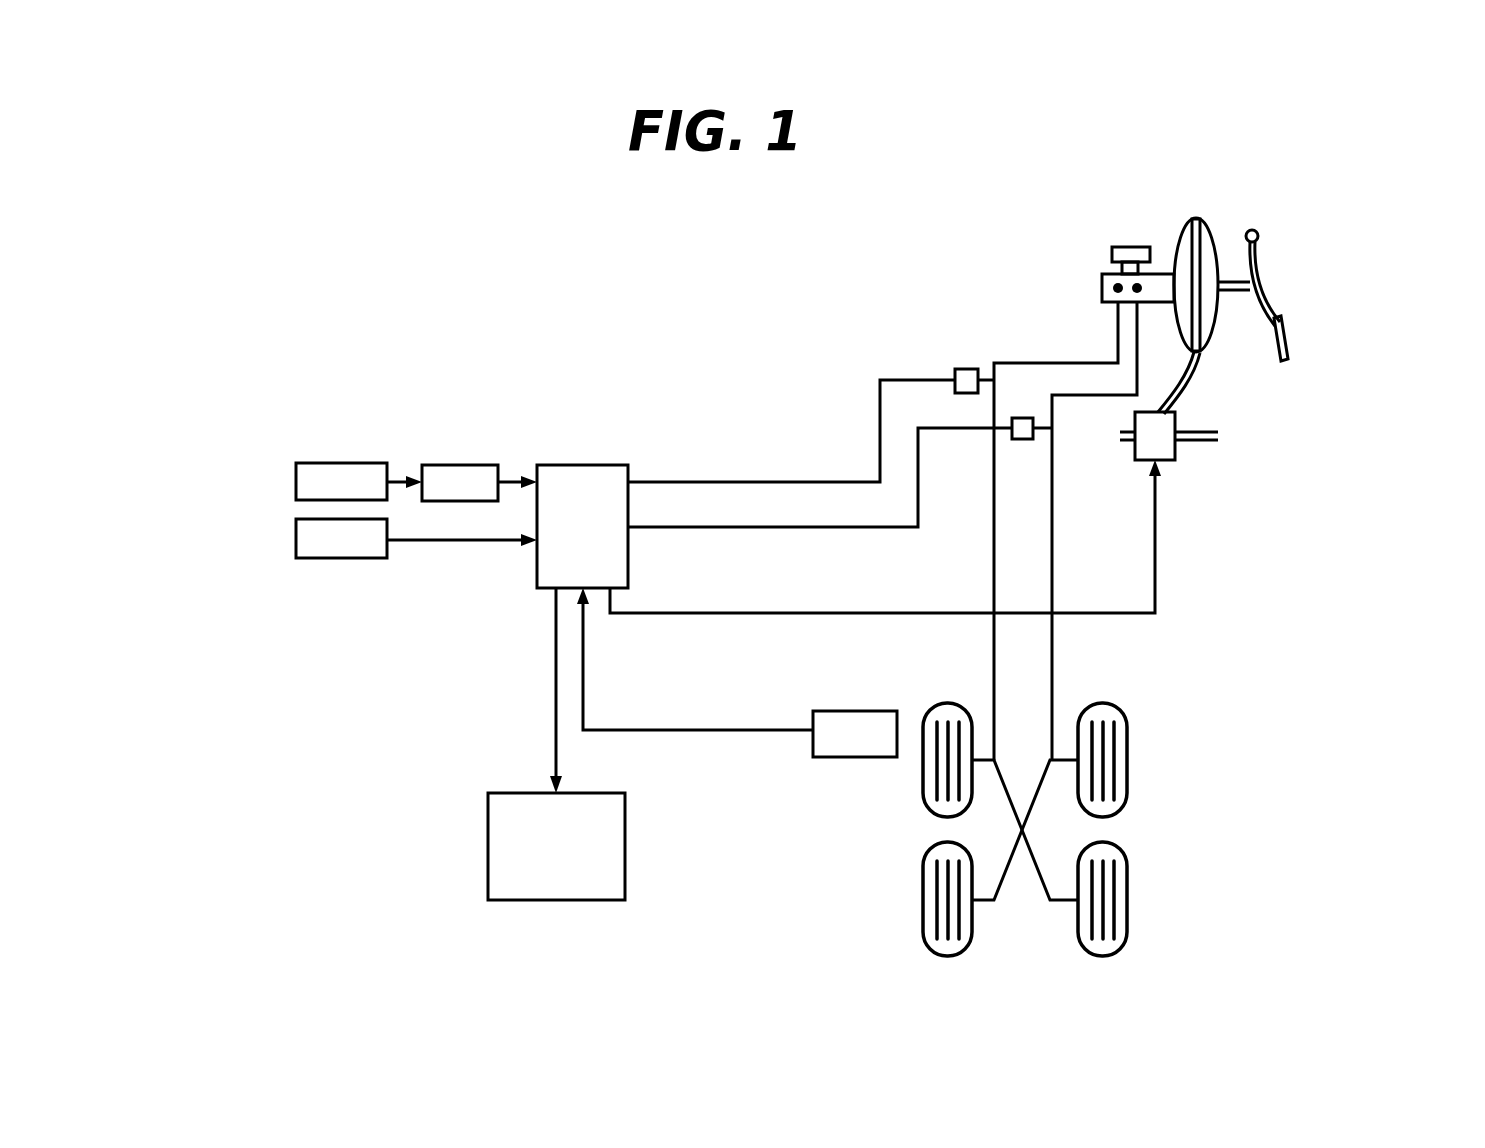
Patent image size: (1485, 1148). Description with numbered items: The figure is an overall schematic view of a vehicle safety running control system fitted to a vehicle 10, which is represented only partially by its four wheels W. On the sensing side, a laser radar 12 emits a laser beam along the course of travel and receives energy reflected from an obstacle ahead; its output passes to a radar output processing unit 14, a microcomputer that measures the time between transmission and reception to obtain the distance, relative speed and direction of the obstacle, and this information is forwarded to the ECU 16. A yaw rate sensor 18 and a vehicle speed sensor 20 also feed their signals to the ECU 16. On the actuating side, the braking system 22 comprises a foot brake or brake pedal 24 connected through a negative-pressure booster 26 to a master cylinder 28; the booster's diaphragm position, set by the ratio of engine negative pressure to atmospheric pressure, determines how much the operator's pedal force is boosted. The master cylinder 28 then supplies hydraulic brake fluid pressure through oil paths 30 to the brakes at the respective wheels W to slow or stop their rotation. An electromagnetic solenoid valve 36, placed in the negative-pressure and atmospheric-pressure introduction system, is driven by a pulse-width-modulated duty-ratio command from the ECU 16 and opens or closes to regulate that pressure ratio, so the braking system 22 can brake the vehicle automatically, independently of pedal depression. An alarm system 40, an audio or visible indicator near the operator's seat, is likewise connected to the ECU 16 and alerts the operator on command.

The vehicle 10 is at (756, 436).
The laser radar 12 is at (296, 487).
The radar output processing unit 14 is at (458, 465).
The ECU 16 is at (578, 470).
The yaw rate sensor 18 is at (296, 546).
The vehicle speed sensor 20 is at (828, 757).
The braking system 22 is at (1262, 396).
The foot brake (brake pedal) 24 is at (1257, 260).
The negative-pressure booster 26 is at (1182, 233).
The master cylinder 28 is at (1102, 277).
The oil paths 30 is at (1070, 678).
The electromagnetic solenoid valve 36 is at (1160, 449).
The alarm system 40 is at (625, 860).
The wheel W is at (935, 787).